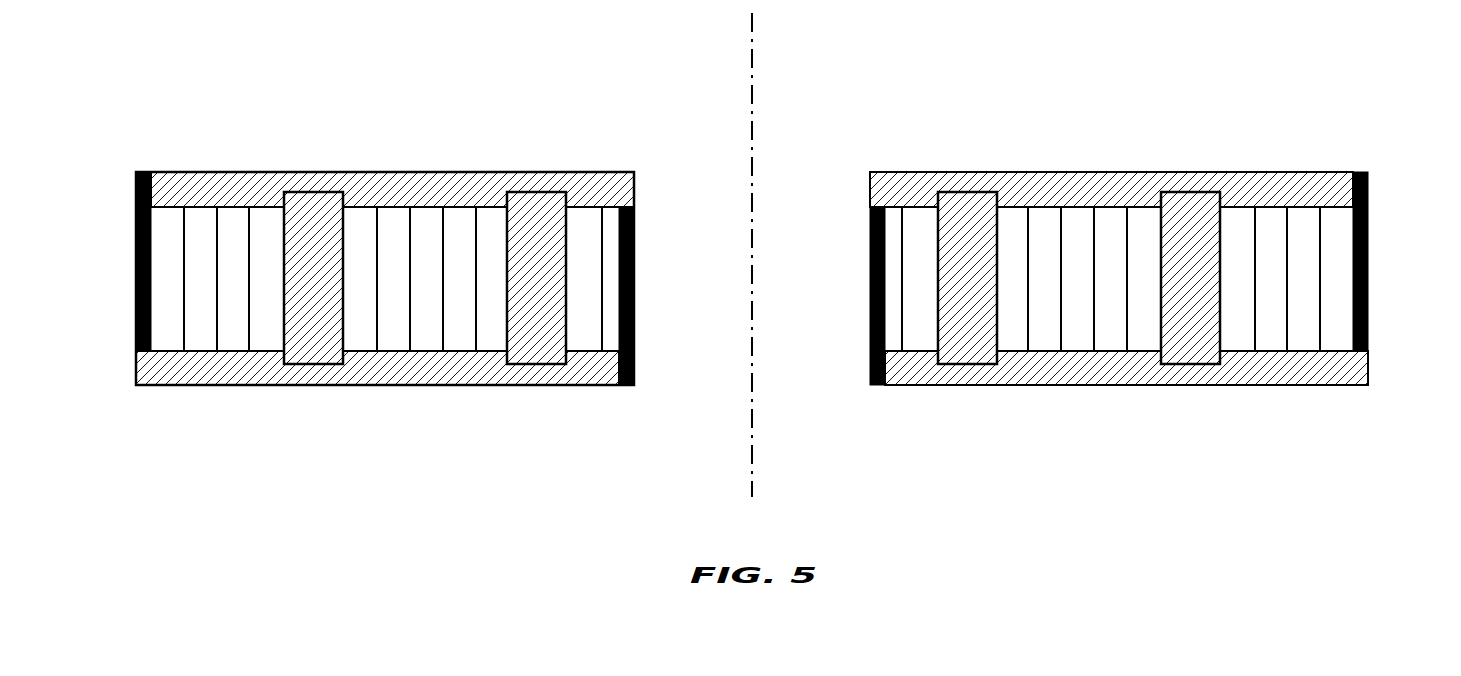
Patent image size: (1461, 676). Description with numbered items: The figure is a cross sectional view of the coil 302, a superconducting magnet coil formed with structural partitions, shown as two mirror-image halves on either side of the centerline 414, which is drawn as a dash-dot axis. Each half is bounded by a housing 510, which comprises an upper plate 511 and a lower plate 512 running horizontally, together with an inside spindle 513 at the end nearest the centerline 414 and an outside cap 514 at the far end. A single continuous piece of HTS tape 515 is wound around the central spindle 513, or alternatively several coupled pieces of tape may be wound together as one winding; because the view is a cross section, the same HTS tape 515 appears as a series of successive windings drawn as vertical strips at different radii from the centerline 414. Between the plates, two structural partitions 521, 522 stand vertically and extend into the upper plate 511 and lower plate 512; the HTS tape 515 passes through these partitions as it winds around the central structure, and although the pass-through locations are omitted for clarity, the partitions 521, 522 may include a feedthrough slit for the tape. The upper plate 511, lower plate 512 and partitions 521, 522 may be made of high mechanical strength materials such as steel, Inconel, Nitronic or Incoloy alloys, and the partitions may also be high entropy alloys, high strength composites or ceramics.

The coil 302 is at (631, 50).
The centerline 414 is at (752, 42).
The housing 510 is at (596, 172).
The upper plate 511 is at (217, 185).
The lower plate 512 is at (203, 372).
The inside spindle 513 is at (634, 277).
The outside cap 514 is at (136, 273).
The HTS tape 515 is at (428, 226).
The structural partition 521 is at (530, 334).
The structural partition 522 is at (312, 325).